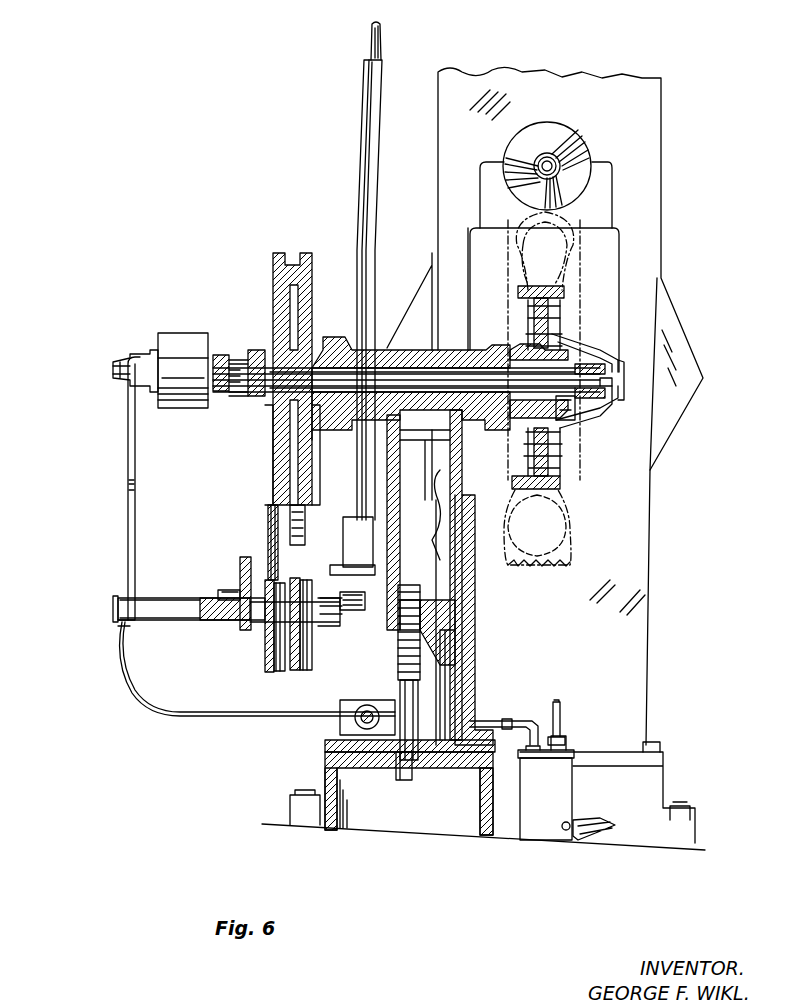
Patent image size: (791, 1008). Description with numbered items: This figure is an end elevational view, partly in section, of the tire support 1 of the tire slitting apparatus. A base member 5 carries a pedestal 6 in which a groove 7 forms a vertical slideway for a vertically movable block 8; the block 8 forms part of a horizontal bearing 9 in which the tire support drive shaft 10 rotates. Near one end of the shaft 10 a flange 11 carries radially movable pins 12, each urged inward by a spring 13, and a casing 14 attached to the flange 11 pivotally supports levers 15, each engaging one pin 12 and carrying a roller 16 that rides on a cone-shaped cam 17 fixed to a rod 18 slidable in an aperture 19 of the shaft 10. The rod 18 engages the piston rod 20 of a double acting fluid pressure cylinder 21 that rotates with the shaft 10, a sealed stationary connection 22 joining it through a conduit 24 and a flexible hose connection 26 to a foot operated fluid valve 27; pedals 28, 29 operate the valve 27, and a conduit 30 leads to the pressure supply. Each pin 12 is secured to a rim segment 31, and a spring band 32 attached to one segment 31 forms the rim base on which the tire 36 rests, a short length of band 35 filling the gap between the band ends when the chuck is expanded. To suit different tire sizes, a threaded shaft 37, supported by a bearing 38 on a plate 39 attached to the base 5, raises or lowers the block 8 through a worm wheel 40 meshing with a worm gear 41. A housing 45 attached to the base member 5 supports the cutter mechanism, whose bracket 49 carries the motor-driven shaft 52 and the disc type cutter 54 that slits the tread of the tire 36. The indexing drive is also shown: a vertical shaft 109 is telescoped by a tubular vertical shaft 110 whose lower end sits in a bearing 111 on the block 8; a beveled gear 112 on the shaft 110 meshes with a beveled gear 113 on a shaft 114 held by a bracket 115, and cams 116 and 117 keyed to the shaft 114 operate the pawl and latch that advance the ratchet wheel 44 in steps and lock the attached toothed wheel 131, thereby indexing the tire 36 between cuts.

The tire support 1 is at (613, 333).
The base member 5 is at (326, 776).
The pedestal 6 is at (470, 648).
The groove 7 is at (450, 688).
The vertically movable block 8 is at (446, 610).
The horizontal bearing 9 is at (333, 346).
The tire support drive shaft 10 is at (330, 412).
The flange 11 is at (520, 346).
The radially movable pins 12 is at (560, 470).
The spring 13 is at (556, 456).
The casing 14 is at (590, 358).
The levers 15 is at (622, 374).
The roller 16 is at (585, 422).
The cone-shaped cam 17 is at (592, 392).
The rod 18 is at (606, 404).
The aperture 19 is at (476, 396).
The piston rod 20 is at (216, 358).
The double acting fluid pressure cylinder 21 is at (180, 333).
The stationary connection 22 is at (148, 362).
The conduit 24 is at (128, 526).
The flexible hose connection 26 is at (186, 716).
The foot operated fluid valve 27 is at (536, 806).
The pedal 28 is at (600, 832).
The pedal 29 is at (585, 838).
The conduit 30 is at (562, 726).
The rim segment 31 is at (566, 293).
The band 32 is at (556, 286).
The short length of band 35 is at (537, 492).
The tire 36 is at (578, 224).
The threaded shaft 37 is at (400, 693).
The bearing 38 is at (427, 776).
The plate 39 is at (330, 748).
The worm wheel 40 is at (405, 705).
The worm gear 41 is at (355, 720).
The ratchet wheel 44 is at (305, 252).
The housing 45 is at (483, 458).
The bracket 49 is at (495, 196).
The shaft 52 is at (566, 144).
The disc type cutter 54 is at (583, 160).
The vertical shaft 109 is at (370, 36).
The tubular vertical shaft 110 is at (367, 110).
The bearing 111 is at (346, 522).
The beveled gear 112 is at (343, 560).
The beveled gear 113 is at (340, 596).
The shaft 114 is at (254, 630).
The bracket 115 is at (240, 578).
The cam 116 is at (300, 662).
The cam 117 is at (268, 642).
The toothed wheel 131 is at (280, 252).